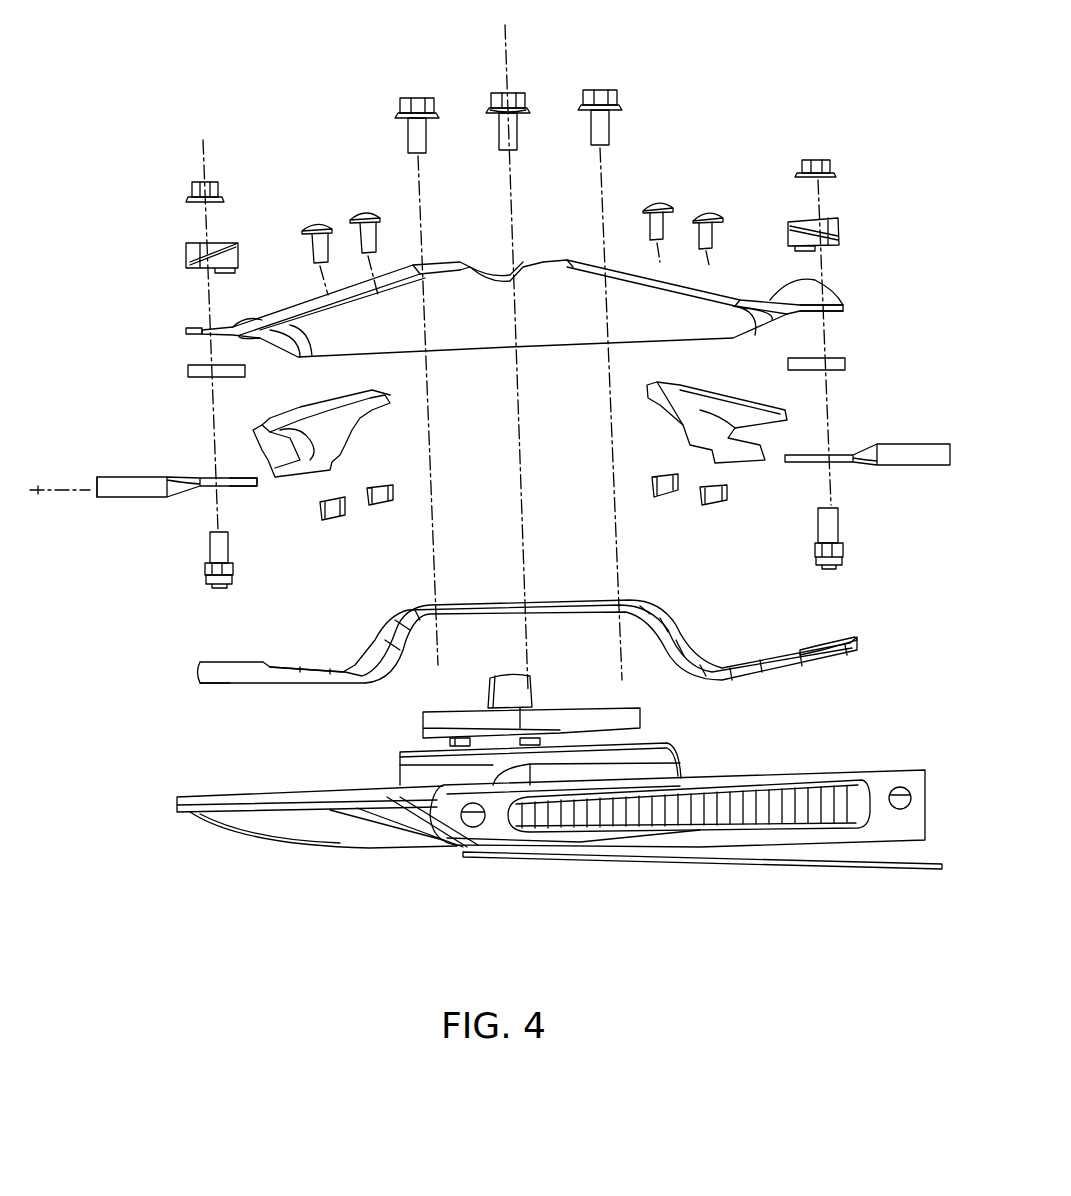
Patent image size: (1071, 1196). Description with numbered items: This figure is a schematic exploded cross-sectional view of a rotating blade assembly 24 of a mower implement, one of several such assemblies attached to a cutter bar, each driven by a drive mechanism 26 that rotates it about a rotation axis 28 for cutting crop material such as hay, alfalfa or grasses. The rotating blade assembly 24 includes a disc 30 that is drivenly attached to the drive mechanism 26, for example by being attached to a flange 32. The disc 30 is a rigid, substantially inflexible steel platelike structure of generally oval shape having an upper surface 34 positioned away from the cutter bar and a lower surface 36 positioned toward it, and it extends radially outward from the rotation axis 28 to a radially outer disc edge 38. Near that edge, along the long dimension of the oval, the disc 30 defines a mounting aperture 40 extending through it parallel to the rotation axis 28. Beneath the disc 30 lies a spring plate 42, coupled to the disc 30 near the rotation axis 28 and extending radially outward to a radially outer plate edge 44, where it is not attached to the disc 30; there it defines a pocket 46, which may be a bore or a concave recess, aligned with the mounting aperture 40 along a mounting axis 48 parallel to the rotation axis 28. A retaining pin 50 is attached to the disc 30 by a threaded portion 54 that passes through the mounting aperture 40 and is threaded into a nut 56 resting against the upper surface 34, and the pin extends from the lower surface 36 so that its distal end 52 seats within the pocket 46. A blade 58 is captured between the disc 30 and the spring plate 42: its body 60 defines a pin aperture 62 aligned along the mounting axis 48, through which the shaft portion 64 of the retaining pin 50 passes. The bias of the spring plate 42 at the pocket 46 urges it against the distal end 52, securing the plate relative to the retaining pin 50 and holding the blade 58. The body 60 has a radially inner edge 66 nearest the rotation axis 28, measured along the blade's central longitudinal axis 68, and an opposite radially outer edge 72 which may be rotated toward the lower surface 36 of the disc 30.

The rotating blade assembly 24 is at (809, 72).
The drive mechanism 26 is at (724, 823).
The rotation axis 28 is at (505, 60).
The disc 30 is at (731, 286).
The flange 32 is at (630, 716).
The upper surface 34 is at (783, 283).
The lower surface 36 is at (752, 342).
The radially outer disc edge 38 is at (186, 334).
The mounting aperture 40 is at (196, 325).
The spring plate 42 is at (770, 645).
The radially outer plate edge 44 is at (200, 673).
The pocket 46 is at (207, 660).
The mounting axis 48 is at (200, 143).
The retaining pin 50 is at (202, 548).
The distal end 52 is at (226, 590).
The threaded portion 54 is at (230, 540).
The nut 56 is at (192, 190).
The blade 58 is at (136, 466).
The body 60 is at (182, 475).
The pin aperture 62 is at (228, 465).
The shaft portion 64 is at (235, 573).
The radially inner edge 66 is at (265, 487).
The central longitudinal axis 68 is at (48, 474).
The radially outer edge 72 is at (96, 498).